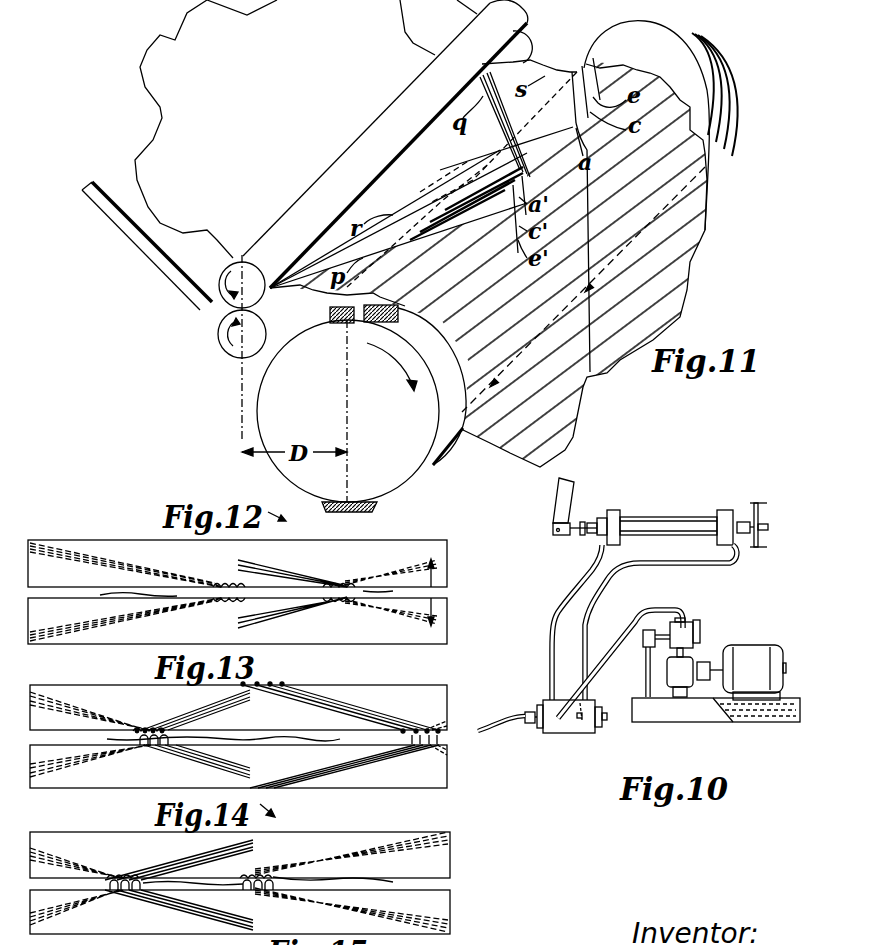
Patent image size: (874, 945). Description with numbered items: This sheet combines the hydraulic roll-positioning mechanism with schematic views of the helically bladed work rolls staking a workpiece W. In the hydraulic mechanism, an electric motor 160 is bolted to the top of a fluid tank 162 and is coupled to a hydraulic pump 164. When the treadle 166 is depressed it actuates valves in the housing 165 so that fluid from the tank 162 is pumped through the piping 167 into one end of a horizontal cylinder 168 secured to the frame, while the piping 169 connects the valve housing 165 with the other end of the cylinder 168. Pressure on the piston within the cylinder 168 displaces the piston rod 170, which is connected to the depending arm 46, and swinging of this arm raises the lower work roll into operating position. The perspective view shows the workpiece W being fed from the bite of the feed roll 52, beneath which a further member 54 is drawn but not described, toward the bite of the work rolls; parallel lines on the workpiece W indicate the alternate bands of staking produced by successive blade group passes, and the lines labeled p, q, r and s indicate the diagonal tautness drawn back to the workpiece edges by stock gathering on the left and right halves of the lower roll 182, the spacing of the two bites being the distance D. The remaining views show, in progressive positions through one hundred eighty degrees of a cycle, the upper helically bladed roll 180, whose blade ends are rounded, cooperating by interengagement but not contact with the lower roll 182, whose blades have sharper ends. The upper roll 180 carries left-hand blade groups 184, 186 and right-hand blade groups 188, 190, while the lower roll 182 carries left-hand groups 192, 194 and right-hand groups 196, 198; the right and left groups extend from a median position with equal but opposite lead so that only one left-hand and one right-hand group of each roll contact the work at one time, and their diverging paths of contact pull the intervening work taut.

In FIG. 11, the feed roll 52 is at (530, 46).
In FIG. 11, the lower guide plate 54 is at (143, 256).
In FIG. 11, the lower helically bladed work roll 182 is at (433, 455).
In FIG. 12, the lower helically bladed work roll 182 is at (438, 637).
In FIG. 13, the lower helically bladed work roll 182 is at (440, 777).
In FIG. 14, the lower helically bladed work roll 182 is at (443, 910).
In FIG. 11, the left-hand blade group 192 is at (361, 506).
In FIG. 12, the left-hand blade group 192 is at (133, 622).
In FIG. 13, the left-hand blade group 192 is at (190, 763).
In FIG. 11, the left-hand blade group 194 is at (344, 326).
In FIG. 14, the left-hand blade group 194 is at (180, 910).
In FIG. 11, the right-hand blade group 198 is at (716, 48).
In FIG. 14, the right-hand blade group 198 is at (333, 913).
In FIG. 11, the web workpiece W is at (604, 372).
In FIG. 12, the web workpiece W is at (284, 590).
In FIG. 13, the web workpiece W is at (291, 713).
In FIG. 14, the web workpiece W is at (363, 883).
In FIG. 10, the depending arm 46 is at (575, 497).
In FIG. 10, the horizontal cylinder 168 is at (667, 522).
In FIG. 10, the piston rod 170 is at (575, 536).
In FIG. 10, the piping 167 is at (617, 578).
In FIG. 10, the piping 169 is at (558, 603).
In FIG. 10, the hydraulic pump 164 is at (690, 655).
In FIG. 10, the electric motor 160 is at (750, 653).
In FIG. 10, the tank 162 is at (682, 717).
In FIG. 10, the valve housing 165 is at (574, 731).
In FIG. 10, the treadle 166 is at (498, 722).
In FIG. 12, the upper helically bladed work roll 180 is at (443, 560).
In FIG. 13, the upper helically bladed work roll 180 is at (440, 705).
In FIG. 14, the upper helically bladed work roll 180 is at (440, 860).
In FIG. 12, the left-hand blade group 184 is at (110, 557).
In FIG. 13, the left-hand blade group 184 is at (184, 712).
In FIG. 12, the right-hand blade group 190 is at (305, 582).
In FIG. 13, the right-hand blade group 190 is at (354, 708).
In FIG. 12, the right-hand blade group 196 is at (327, 606).
In FIG. 13, the right-hand blade group 196 is at (404, 757).
In FIG. 14, the left-hand blade group 186 is at (192, 858).
In FIG. 14, the right-hand blade group 188 is at (322, 857).